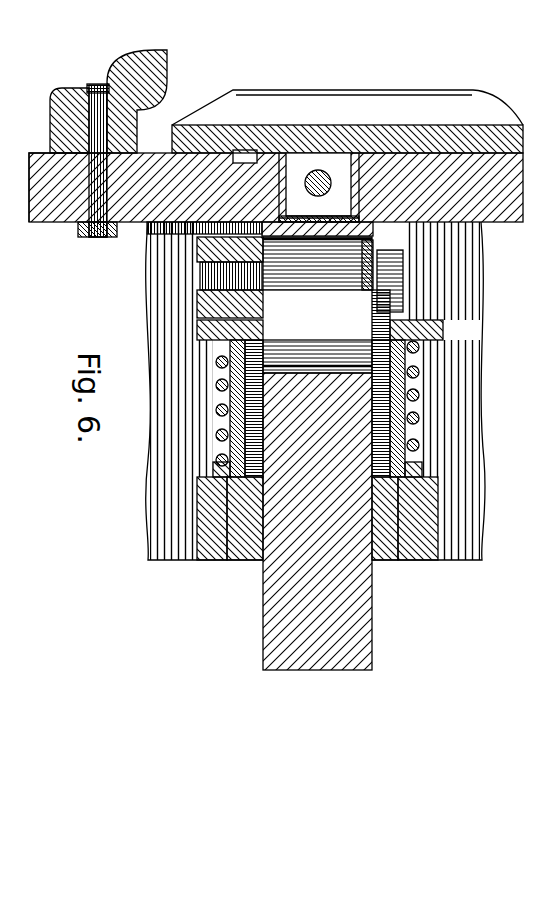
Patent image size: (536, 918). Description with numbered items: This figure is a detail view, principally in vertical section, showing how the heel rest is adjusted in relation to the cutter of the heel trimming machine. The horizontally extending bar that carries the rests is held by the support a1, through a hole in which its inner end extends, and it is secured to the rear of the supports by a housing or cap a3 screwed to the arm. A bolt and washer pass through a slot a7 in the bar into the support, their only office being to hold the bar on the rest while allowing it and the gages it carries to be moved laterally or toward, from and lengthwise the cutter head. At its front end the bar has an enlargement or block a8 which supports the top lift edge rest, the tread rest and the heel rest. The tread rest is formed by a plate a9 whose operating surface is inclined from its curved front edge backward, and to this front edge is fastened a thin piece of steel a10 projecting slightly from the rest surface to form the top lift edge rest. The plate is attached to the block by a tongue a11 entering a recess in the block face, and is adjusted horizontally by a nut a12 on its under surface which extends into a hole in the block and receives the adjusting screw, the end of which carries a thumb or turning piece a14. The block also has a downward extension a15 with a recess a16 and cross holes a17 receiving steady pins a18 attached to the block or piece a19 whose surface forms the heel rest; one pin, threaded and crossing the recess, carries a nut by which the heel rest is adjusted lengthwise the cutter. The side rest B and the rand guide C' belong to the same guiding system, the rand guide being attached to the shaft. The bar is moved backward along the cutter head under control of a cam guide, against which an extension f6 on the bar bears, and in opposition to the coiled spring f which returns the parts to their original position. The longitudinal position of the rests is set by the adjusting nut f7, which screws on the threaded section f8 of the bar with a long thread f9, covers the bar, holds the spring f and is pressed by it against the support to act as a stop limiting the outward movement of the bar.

The support a1 is at (205, 562).
The housing or cap a3 is at (407, 560).
The slot a7 is at (263, 312).
The block a8 is at (503, 202).
The plate a9 is at (366, 132).
The thin piece of steel a10 is at (424, 93).
The tongue a11 is at (233, 152).
The nut a12 is at (318, 170).
The thumb or turning piece a14 is at (293, 280).
The downward extension a15 is at (38, 222).
The recess a16 is at (375, 292).
The cross holes a17 is at (67, 157).
The steady pins a18 is at (72, 88).
The block or piece a19 is at (137, 67).
The spring f is at (228, 560).
The extension f6 is at (415, 400).
The adjusting nut f7 is at (415, 455).
The threaded section f8 is at (283, 430).
The long thread f9 is at (382, 560).
The side rest B is at (450, 560).
The rand guide C' is at (347, 107).